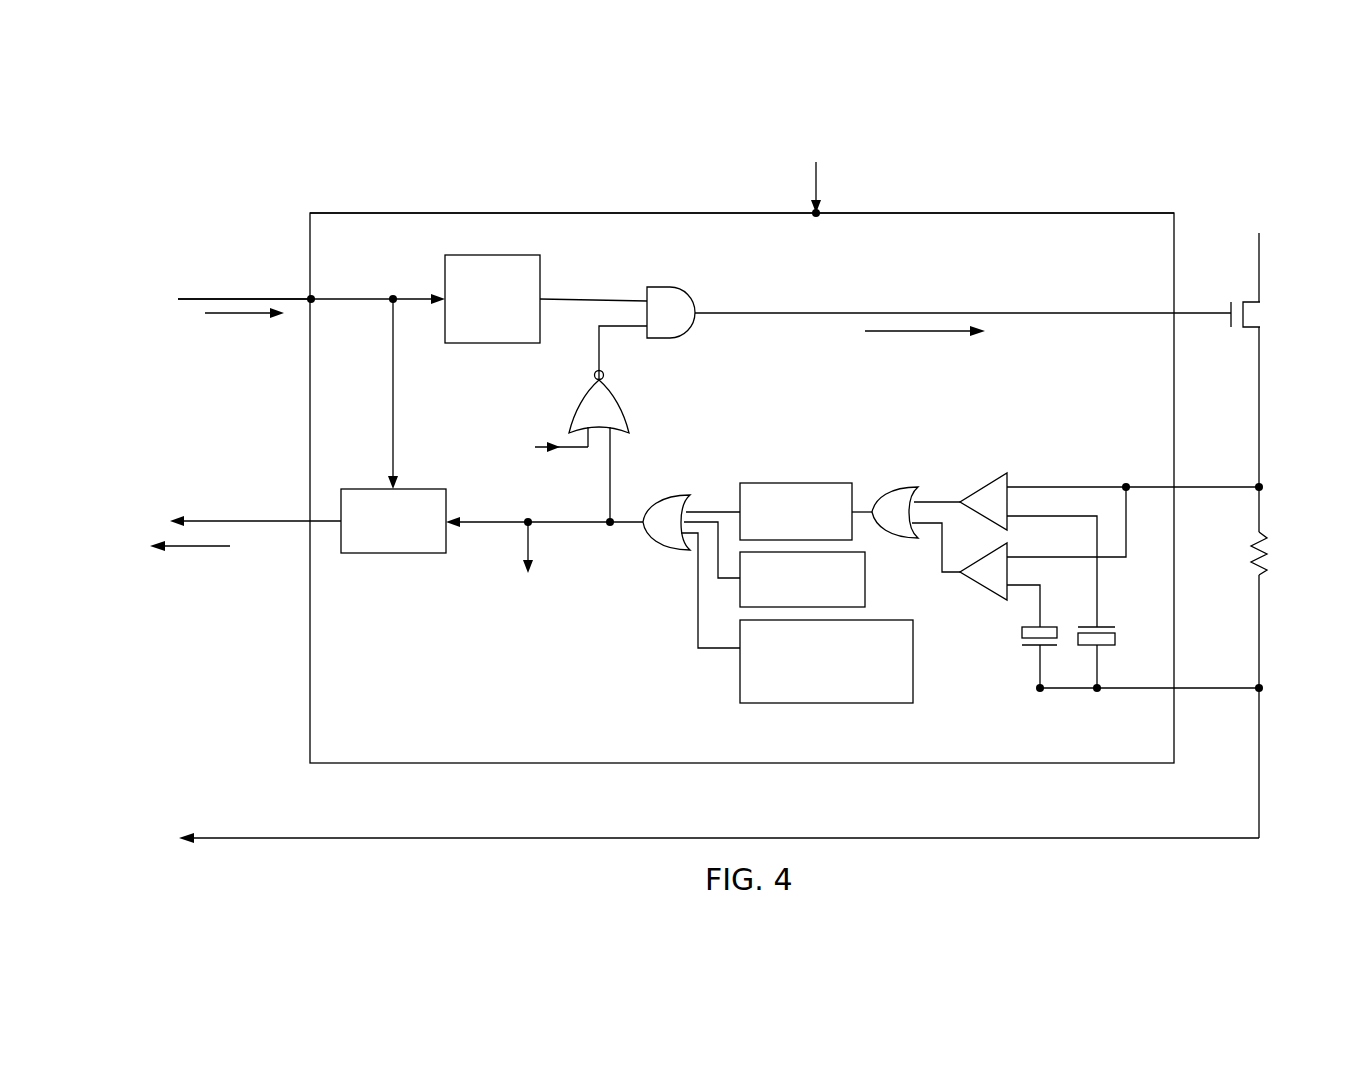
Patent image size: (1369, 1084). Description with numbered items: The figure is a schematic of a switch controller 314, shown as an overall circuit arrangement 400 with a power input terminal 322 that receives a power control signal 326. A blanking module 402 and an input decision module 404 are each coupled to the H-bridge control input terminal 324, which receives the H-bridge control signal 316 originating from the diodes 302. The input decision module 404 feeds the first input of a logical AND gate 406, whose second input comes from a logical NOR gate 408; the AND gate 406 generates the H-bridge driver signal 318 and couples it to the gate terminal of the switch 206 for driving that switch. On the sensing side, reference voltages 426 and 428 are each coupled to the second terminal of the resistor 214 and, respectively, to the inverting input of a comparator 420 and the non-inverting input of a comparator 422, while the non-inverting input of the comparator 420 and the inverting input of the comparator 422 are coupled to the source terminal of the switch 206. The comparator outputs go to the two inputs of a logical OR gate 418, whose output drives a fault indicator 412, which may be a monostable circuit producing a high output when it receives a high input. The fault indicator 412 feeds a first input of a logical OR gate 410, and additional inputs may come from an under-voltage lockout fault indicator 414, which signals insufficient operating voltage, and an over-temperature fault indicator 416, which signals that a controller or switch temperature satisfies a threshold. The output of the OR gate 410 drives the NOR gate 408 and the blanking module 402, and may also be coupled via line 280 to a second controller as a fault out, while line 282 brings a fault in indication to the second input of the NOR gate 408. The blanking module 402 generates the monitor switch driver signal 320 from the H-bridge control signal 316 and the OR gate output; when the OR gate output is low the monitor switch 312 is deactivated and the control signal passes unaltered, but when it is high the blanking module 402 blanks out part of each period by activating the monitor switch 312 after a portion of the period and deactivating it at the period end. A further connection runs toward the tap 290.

The switch controller circuit 400 is at (1153, 146).
The switch controller 314 is at (1068, 763).
The power input terminal 322 is at (818, 211).
The power control signal 326 is at (815, 171).
The H-bridge control input terminal 324 is at (311, 299).
The diode 302 is at (216, 272).
The H-bridge control signal 316 is at (283, 332).
The input decision module 404 is at (467, 345).
The AND gate 406 is at (676, 284).
The H-bridge driver signal 318 is at (963, 363).
The NOR gate 408 is at (615, 388).
The line 282 is at (570, 476).
The OR gate 410 is at (670, 494).
The line 280 is at (563, 544).
The blanking module 402 is at (364, 556).
The monitor switch 312 is at (255, 493).
The monitor switch driver signal 320 is at (214, 585).
The fault indicator 412 is at (764, 483).
The under-voltage lockout (UVLO) fault indicator 414 is at (865, 583).
The over-temperature fault indicator 416 is at (740, 683).
The OR gate 418 is at (899, 489).
The comparator 420 is at (991, 481).
The comparator 422 is at (972, 590).
The reference voltage 428 is at (1020, 633).
The reference voltage 426 is at (1115, 640).
The switch 206 is at (1262, 316).
The resistor 214 is at (1250, 553).
The tap 290 is at (700, 821).